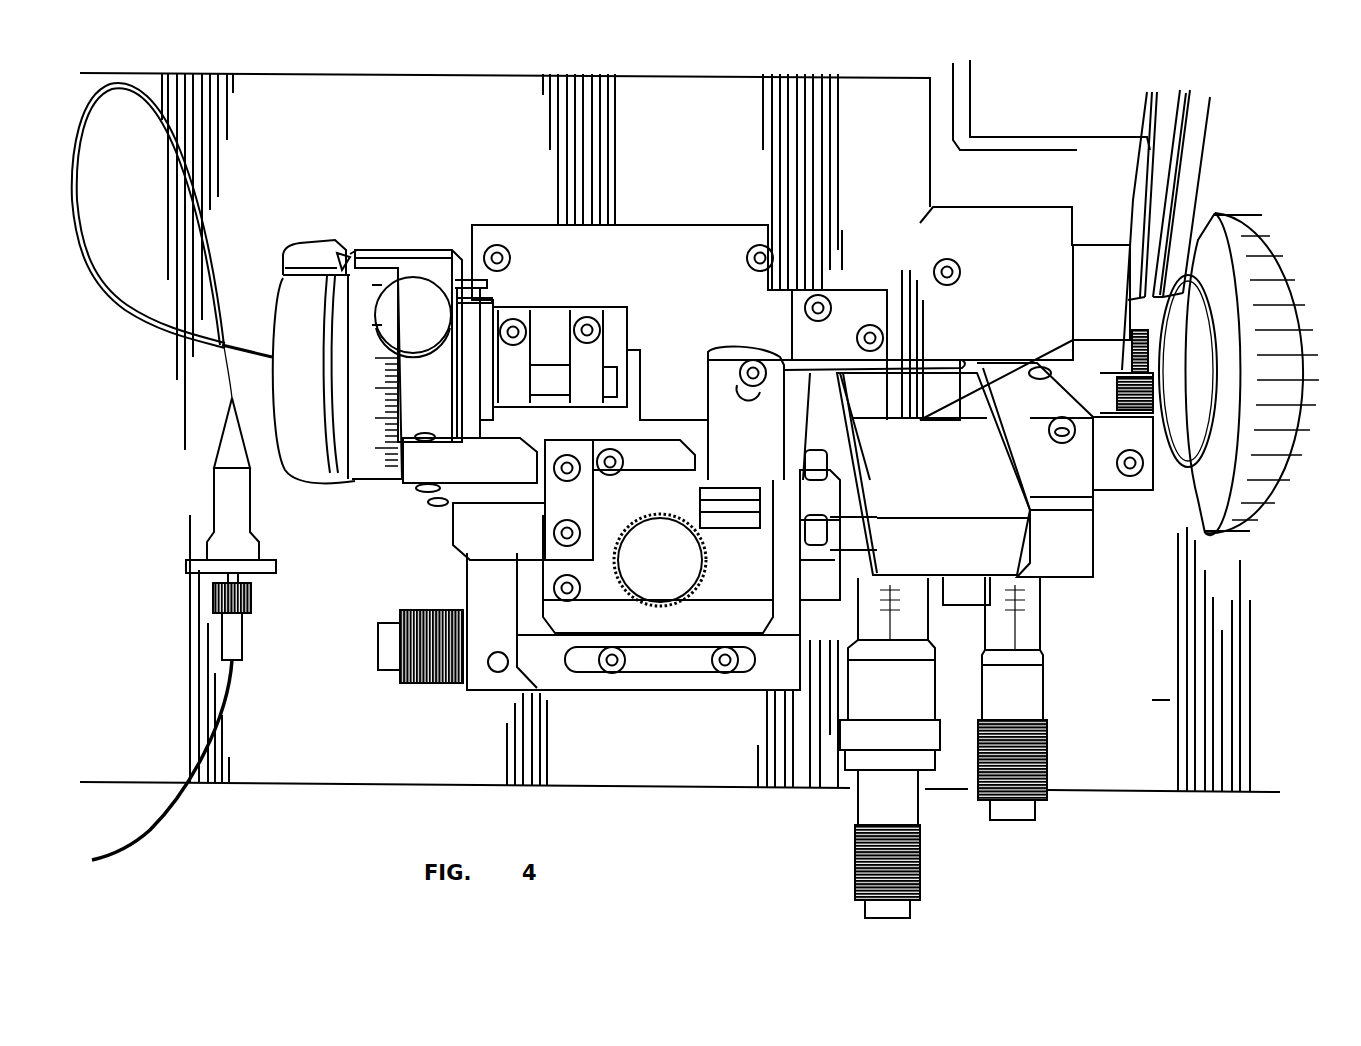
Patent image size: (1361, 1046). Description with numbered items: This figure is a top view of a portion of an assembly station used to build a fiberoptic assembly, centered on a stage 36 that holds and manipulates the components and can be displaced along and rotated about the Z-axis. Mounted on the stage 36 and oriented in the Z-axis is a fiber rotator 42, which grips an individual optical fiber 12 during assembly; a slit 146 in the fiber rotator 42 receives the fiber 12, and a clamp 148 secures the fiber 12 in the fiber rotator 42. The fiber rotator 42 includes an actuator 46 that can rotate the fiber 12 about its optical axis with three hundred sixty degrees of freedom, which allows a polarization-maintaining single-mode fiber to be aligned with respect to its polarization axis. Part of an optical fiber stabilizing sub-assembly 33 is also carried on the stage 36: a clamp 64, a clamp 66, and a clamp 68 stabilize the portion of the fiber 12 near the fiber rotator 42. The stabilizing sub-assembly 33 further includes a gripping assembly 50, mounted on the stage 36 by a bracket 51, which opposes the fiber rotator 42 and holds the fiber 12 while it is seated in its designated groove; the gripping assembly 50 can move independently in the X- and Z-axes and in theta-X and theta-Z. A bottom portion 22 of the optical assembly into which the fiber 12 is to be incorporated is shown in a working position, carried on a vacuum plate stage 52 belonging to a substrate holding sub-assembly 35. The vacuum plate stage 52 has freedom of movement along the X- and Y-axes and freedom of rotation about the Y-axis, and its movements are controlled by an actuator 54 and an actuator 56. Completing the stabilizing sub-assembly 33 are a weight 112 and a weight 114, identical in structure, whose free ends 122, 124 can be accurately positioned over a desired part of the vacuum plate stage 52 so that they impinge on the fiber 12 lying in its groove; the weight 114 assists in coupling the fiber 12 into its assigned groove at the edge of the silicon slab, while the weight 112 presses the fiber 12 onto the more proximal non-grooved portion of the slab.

The optical fiber 12 is at (112, 265).
The bottom portion 22 is at (1153, 385).
The optical fiber stabilizing sub-assembly 33 is at (885, 120).
The substrate holding sub-assembly 35 is at (1143, 672).
The stage 36 is at (662, 235).
The fiber rotator 42 is at (430, 228).
The actuator 46 is at (318, 470).
The gripping assembly 50 is at (1060, 545).
The bracket 51 is at (920, 545).
The vacuum plate stage 52 is at (1105, 475).
The actuator 54 is at (865, 870).
The actuator 56 is at (1030, 775).
The clamp 64 is at (513, 318).
The clamp 66 is at (587, 317).
The clamp 68 is at (720, 365).
The weight 112 is at (1148, 118).
The weight 114 is at (1195, 128).
The free end 122 is at (1100, 350).
The free end 124 is at (1150, 360).
The slit 146 is at (318, 252).
The clamp 148 is at (412, 290).